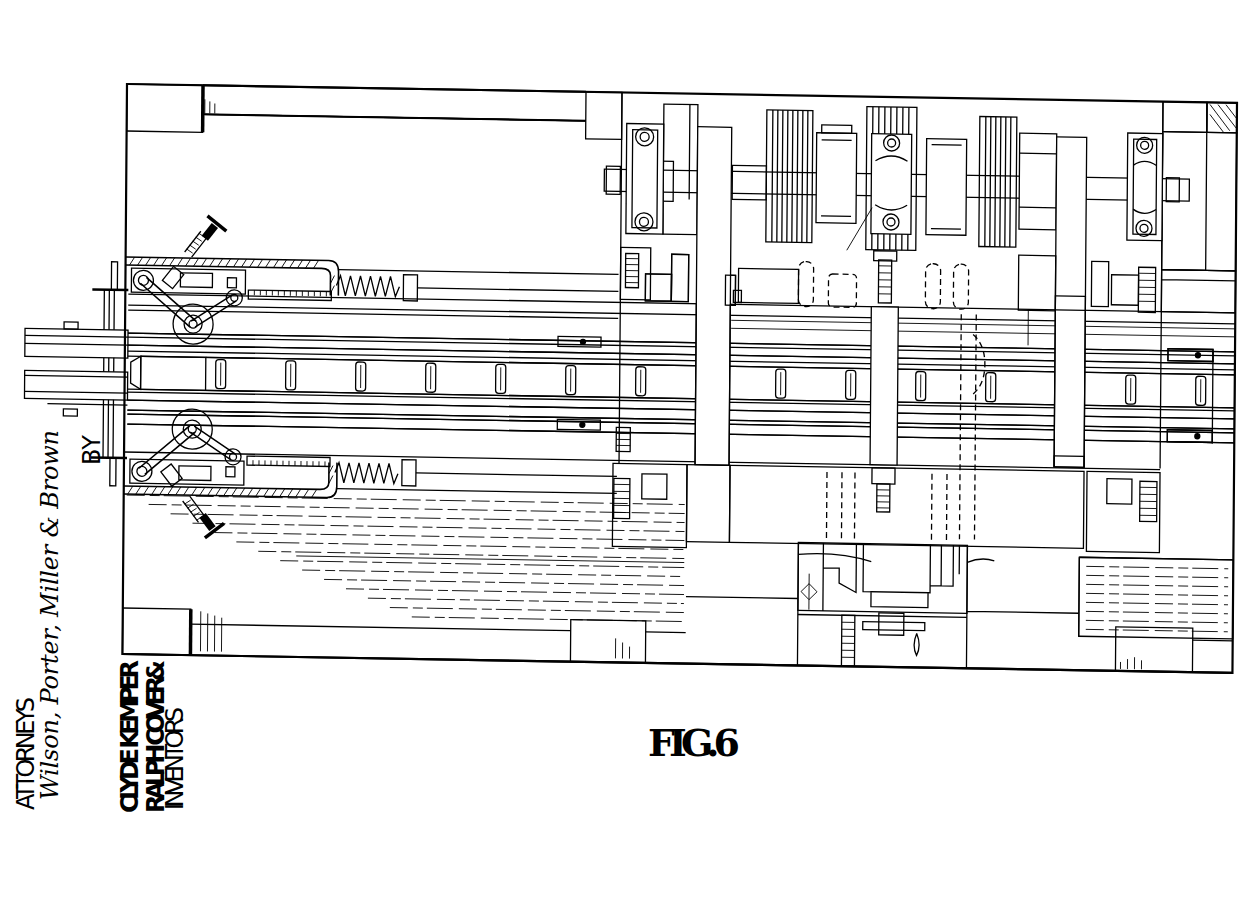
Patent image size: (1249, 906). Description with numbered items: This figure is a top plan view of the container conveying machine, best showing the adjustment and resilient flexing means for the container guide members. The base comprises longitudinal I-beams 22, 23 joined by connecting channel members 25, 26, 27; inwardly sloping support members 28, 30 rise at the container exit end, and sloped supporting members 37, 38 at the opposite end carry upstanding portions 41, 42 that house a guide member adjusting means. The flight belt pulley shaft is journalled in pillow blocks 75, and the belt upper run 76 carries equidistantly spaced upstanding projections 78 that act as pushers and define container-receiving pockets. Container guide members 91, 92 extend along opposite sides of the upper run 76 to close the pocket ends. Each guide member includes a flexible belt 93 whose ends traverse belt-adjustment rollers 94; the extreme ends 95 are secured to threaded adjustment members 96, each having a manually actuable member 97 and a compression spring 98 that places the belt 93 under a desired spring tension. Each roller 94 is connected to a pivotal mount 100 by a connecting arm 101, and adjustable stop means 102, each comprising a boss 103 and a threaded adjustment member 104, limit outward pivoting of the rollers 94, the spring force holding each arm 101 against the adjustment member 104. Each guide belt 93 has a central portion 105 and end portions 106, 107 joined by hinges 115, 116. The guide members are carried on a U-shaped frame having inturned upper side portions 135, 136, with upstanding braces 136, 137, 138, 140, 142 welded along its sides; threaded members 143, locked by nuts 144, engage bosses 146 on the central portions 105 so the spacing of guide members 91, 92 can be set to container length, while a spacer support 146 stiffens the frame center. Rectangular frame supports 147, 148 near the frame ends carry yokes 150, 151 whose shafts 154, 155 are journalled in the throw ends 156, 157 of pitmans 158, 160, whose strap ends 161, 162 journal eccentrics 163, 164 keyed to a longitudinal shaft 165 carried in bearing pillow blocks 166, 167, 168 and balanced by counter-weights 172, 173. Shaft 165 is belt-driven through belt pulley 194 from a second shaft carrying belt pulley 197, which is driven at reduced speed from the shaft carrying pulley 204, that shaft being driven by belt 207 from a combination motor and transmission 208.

The I-beam 22 is at (496, 657).
The I-beam 23 is at (330, 98).
The connecting channel member 25 is at (1178, 104).
The connecting channel member 26 is at (597, 98).
The connecting channel member 27 is at (176, 97).
The support member 28 is at (1228, 209).
The support member 30 is at (1218, 608).
The sloped supporting member 37 is at (413, 170).
The sloped supporting member 38 is at (430, 577).
The upstanding portion 41 is at (317, 262).
The upstanding portion 42 is at (234, 500).
The bearing pillow block 75 is at (222, 270).
The upper run 76 is at (408, 354).
The projection 78 is at (332, 350).
The container guide member 91 is at (466, 342).
The container guide member 92 is at (524, 420).
The flexible belt 93 is at (488, 342).
The belt-adjustment roller 94 is at (216, 318).
The belt end 95 is at (246, 286).
The threaded adjustment member 96 is at (424, 268).
The manually actuable member 97 is at (410, 262).
The compression spring 98 is at (366, 270).
The pivotal mount 100 is at (130, 262).
The connecting arm 101 is at (168, 328).
The adjustable stop means 102 is at (186, 222).
The boss 103 is at (180, 256).
The manually actuable threaded adjustment member 104 is at (197, 206).
The central portion 105 is at (784, 352).
The end portion 106 is at (466, 420).
The end portion 107 is at (1220, 361).
The hinge 115 is at (581, 340).
The hinge 116 is at (1180, 354).
The inturned upper side portion 135 is at (790, 464).
The upstanding brace 136 is at (619, 296).
The upstanding brace 137 is at (894, 287).
The upstanding brace 138 is at (1168, 306).
The upstanding brace 140 is at (612, 468).
The upstanding brace 142 is at (1160, 498).
The threaded member 143 is at (889, 290).
The nut 144 is at (619, 272).
The spacer support 146 is at (896, 432).
The rectangular frame support 147 is at (714, 489).
The rectangular frame support 148 is at (1068, 463).
The yoke 150 is at (748, 266).
The yoke 151 is at (1053, 284).
The shaft 154 is at (740, 288).
The shaft 155 is at (1046, 319).
The throw end 156 is at (715, 385).
The throw end 157 is at (1080, 317).
The pitman 158 is at (710, 246).
The pitman 160 is at (1061, 248).
The strap end 161 is at (708, 122).
The strap end 162 is at (1068, 134).
The eccentric 163 is at (744, 118).
The eccentric 164 is at (1104, 142).
The shaft 165 is at (609, 180).
The bearing pillow block 166 is at (630, 210).
The bearing pillow block 167 is at (880, 200).
The bearing pillow block 168 is at (1150, 180).
The counter-weight 172 is at (945, 128).
The counter-weight 173 is at (829, 134).
The belt pulley 194 is at (800, 110).
The belt pulley 197 is at (891, 112).
The pulley 204 is at (994, 359).
The belt 207 is at (982, 558).
The combination motor and transmission 208 is at (810, 571).